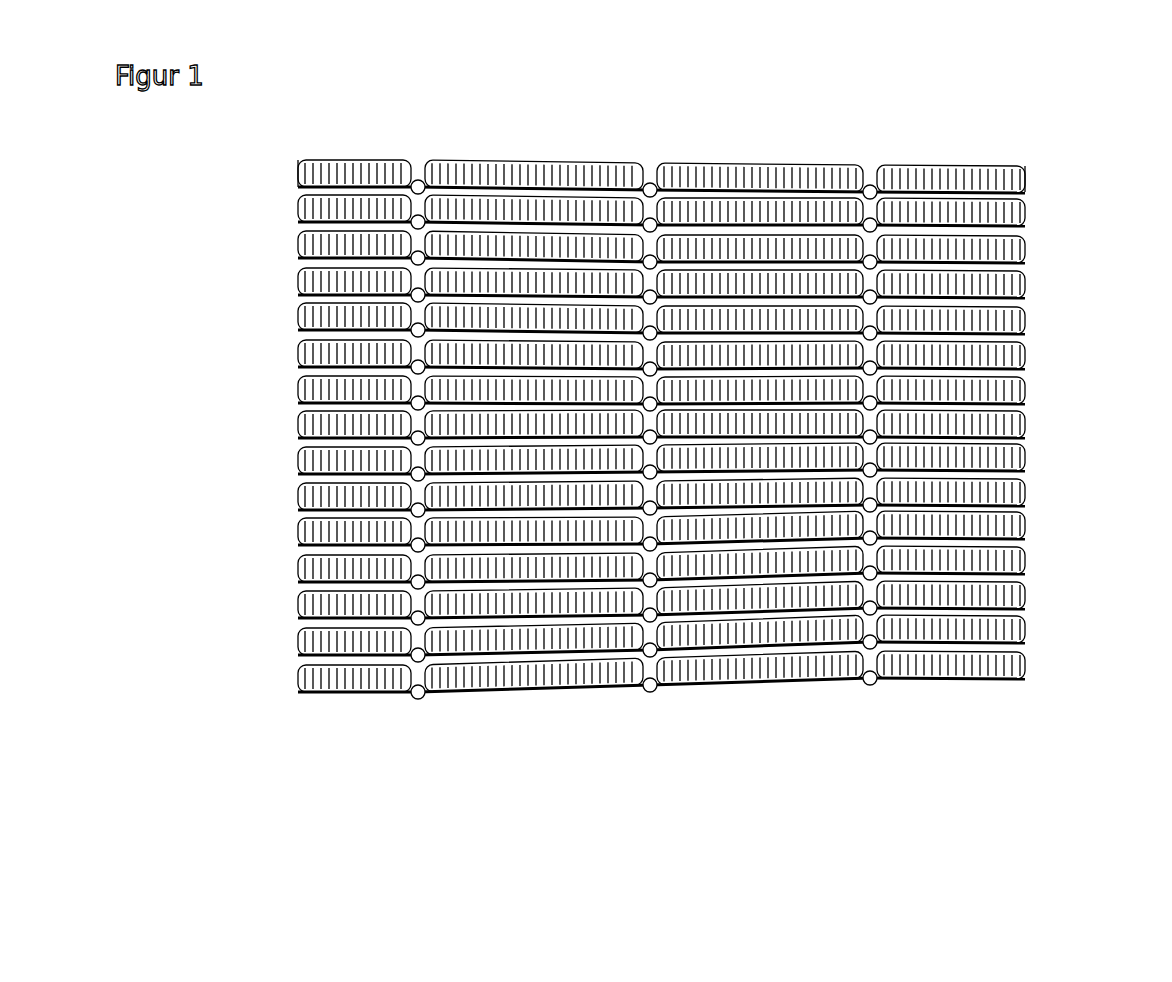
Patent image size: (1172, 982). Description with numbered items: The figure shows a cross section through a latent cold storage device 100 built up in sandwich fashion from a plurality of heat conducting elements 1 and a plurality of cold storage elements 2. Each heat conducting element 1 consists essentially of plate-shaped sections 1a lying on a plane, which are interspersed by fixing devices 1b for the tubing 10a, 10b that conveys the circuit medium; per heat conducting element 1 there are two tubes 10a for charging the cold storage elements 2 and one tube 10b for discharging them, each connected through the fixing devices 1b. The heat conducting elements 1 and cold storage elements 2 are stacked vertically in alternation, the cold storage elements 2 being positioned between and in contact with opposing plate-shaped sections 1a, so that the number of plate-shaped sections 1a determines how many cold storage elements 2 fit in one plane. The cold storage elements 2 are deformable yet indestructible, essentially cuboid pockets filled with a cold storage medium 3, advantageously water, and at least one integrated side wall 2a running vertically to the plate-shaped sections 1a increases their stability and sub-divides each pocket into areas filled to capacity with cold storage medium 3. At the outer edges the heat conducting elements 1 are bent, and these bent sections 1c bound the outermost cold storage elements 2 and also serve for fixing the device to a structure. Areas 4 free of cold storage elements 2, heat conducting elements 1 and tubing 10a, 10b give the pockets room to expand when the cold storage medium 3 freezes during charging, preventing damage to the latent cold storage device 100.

The heat conducting element 1 is at (547, 490).
The plate-shaped section 1a is at (355, 185).
The fixing device 1b is at (418, 222).
The bent section 1c is at (298, 180).
The cold storage element 2 is at (877, 672).
The side wall 2a is at (972, 303).
The cold storage medium 3 is at (945, 493).
The area 4 is at (653, 528).
The tube conveying circuit medium for charging 10a is at (418, 699).
The tube conveying circuit medium for discharging 10b is at (656, 692).
The latent cold storage device 100 is at (225, 277).